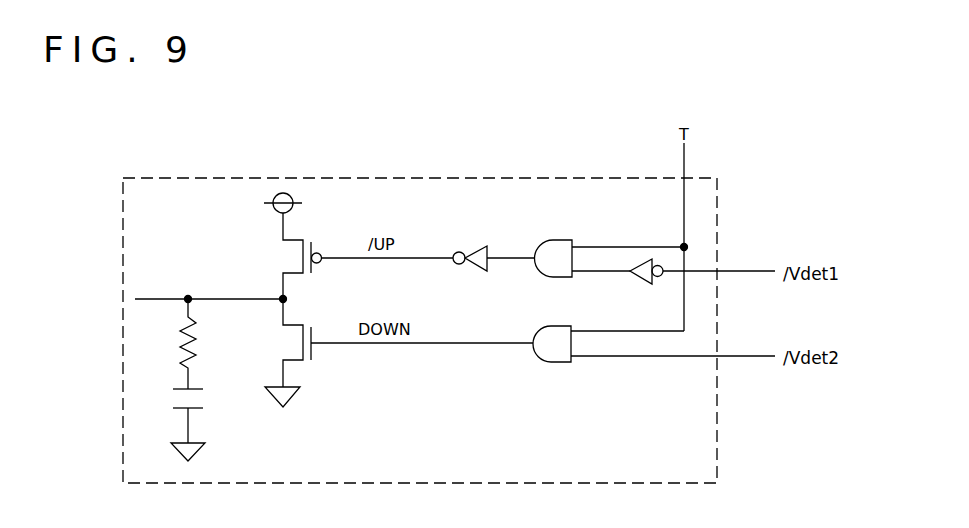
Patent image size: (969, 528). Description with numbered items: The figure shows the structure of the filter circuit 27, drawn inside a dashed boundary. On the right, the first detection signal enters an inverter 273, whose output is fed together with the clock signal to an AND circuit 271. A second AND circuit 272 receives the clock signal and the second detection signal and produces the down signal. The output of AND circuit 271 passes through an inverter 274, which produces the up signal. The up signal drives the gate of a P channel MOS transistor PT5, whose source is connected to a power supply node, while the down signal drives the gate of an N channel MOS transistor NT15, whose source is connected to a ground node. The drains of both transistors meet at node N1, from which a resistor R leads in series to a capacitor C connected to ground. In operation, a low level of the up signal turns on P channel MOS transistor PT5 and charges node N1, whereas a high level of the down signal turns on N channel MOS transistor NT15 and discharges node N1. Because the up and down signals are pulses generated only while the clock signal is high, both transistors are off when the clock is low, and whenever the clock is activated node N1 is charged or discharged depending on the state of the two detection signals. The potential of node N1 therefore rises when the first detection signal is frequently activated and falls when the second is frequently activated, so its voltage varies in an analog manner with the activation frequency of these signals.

The filter circuit 27 is at (121, 233).
The AND circuit 271 is at (560, 243).
The AND circuit 272 is at (557, 352).
The inverter 273 is at (640, 278).
The inverter 274 is at (475, 250).
The node N1 is at (188, 295).
The P channel MOS transistor PT5 is at (277, 246).
The N channel MOS transistor NT15 is at (266, 353).
The resistor R is at (175, 344).
The capacitor C is at (180, 425).